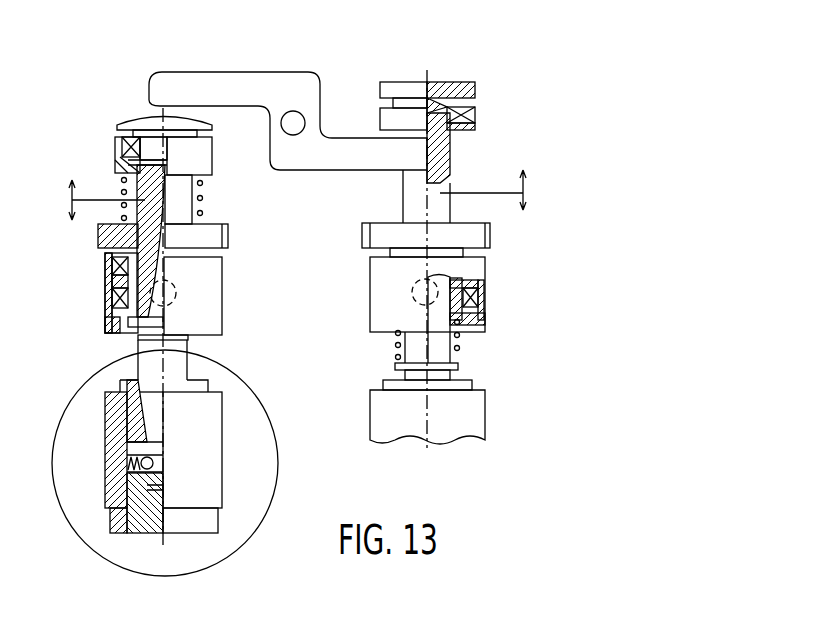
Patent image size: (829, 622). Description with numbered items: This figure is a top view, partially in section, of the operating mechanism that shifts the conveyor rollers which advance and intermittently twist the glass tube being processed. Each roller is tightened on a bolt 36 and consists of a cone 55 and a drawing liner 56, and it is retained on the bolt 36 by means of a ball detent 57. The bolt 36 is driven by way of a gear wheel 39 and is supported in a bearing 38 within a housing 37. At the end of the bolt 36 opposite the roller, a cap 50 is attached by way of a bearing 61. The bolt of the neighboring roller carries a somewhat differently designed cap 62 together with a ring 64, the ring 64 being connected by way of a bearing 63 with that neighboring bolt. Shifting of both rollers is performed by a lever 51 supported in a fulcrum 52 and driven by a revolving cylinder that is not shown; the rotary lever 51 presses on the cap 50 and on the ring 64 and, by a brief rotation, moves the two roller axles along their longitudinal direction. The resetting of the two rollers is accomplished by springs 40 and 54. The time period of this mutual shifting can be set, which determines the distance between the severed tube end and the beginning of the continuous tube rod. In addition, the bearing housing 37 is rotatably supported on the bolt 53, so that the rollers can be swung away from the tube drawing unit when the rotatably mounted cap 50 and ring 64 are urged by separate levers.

The bolt 36 is at (148, 370).
The housing 37 is at (192, 325).
The bearing 38 is at (134, 293).
The gear wheel 39 is at (115, 243).
The spring 40 is at (120, 192).
The cap 50 is at (148, 118).
The lever 51 is at (237, 84).
The fulcrum 52 is at (293, 122).
The bolt 53 is at (420, 300).
The spring 54 is at (462, 350).
The cone 55 is at (137, 418).
The drawing liner 56 is at (130, 468).
The ball detent 57 is at (108, 500).
The bearing 61 is at (127, 152).
The cap 62 is at (457, 92).
The bearing 63 is at (460, 117).
The ring 64 is at (470, 127).